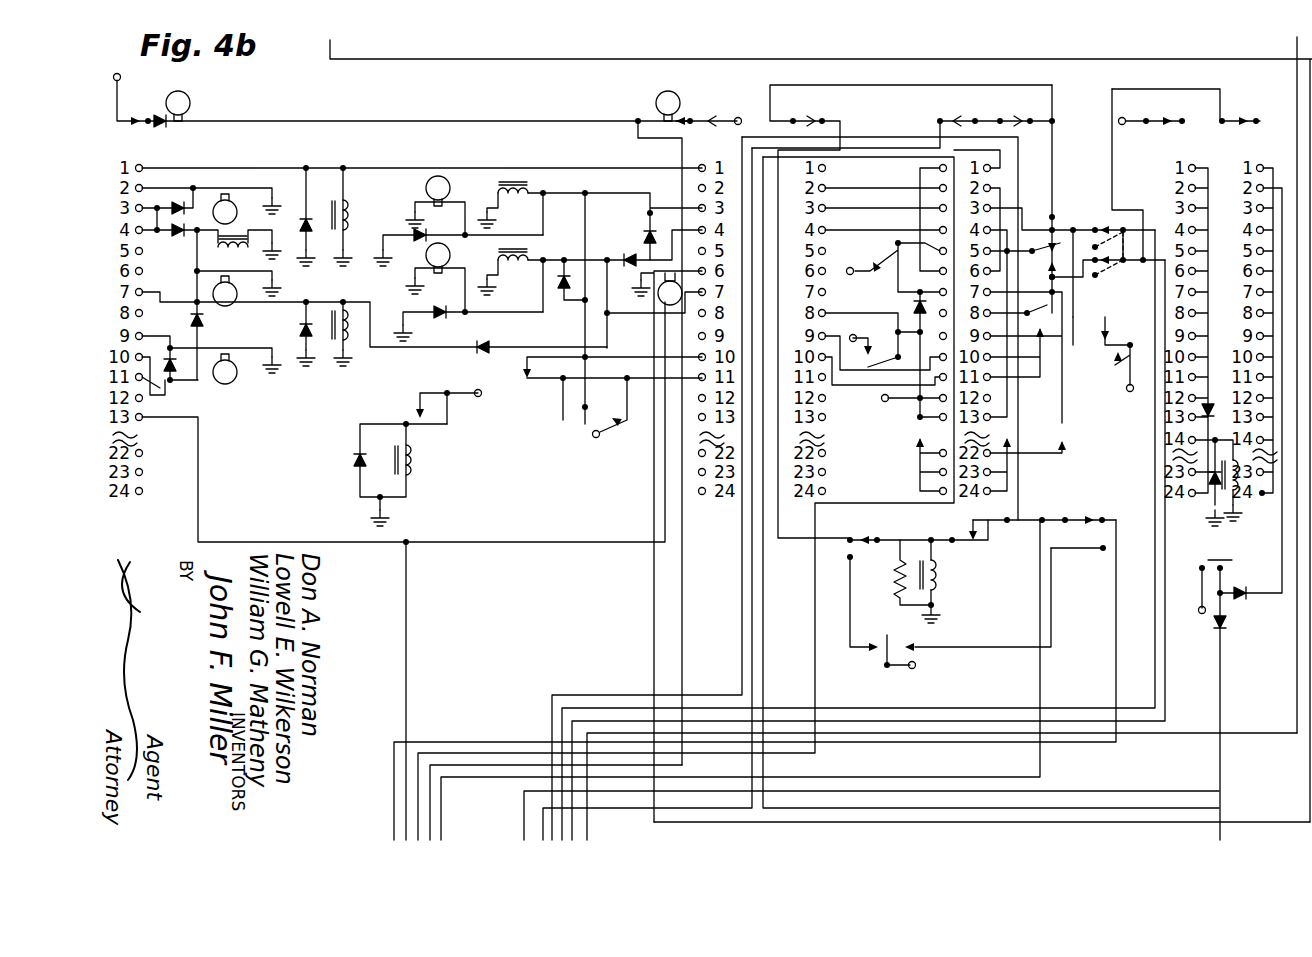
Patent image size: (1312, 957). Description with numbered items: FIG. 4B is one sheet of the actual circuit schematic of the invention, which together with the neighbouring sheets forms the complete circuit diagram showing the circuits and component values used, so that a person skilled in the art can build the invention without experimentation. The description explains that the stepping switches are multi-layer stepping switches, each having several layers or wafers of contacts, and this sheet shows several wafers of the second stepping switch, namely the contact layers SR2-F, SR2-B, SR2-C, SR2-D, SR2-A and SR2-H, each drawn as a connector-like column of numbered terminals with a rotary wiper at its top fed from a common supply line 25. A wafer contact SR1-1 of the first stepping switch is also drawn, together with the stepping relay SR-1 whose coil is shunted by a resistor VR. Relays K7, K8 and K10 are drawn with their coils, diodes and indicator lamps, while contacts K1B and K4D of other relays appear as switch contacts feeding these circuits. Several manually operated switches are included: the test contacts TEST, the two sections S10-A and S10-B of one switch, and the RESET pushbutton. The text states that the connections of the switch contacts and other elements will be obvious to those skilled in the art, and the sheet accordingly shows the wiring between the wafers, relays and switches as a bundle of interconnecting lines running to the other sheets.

The supply line 25 is at (683, 420).
The relay K7 is at (538, 218).
The relay K8 is at (548, 300).
The relay contact K1B is at (612, 396).
The relay contact K4D is at (462, 396).
The relay K10 is at (471, 465).
The stepping relay contact SR2-F is at (752, 102).
The stepping relay contact SR2-B is at (803, 121).
The stepping relay contact SR2-C is at (944, 121).
The stepping relay contact SR2-D is at (1052, 105).
The stepping relay contact SR2-A is at (1158, 121).
The stepping relay contact SR2-H is at (1278, 83).
The test switch TEST is at (993, 388).
The switch S10-A is at (880, 522).
The switch S10-B is at (1052, 516).
The stepping relay contact SR1-1 is at (973, 534).
The resistor VR is at (898, 572).
The stepping relay SR-1 is at (951, 581).
The reset switch RESET is at (1230, 690).